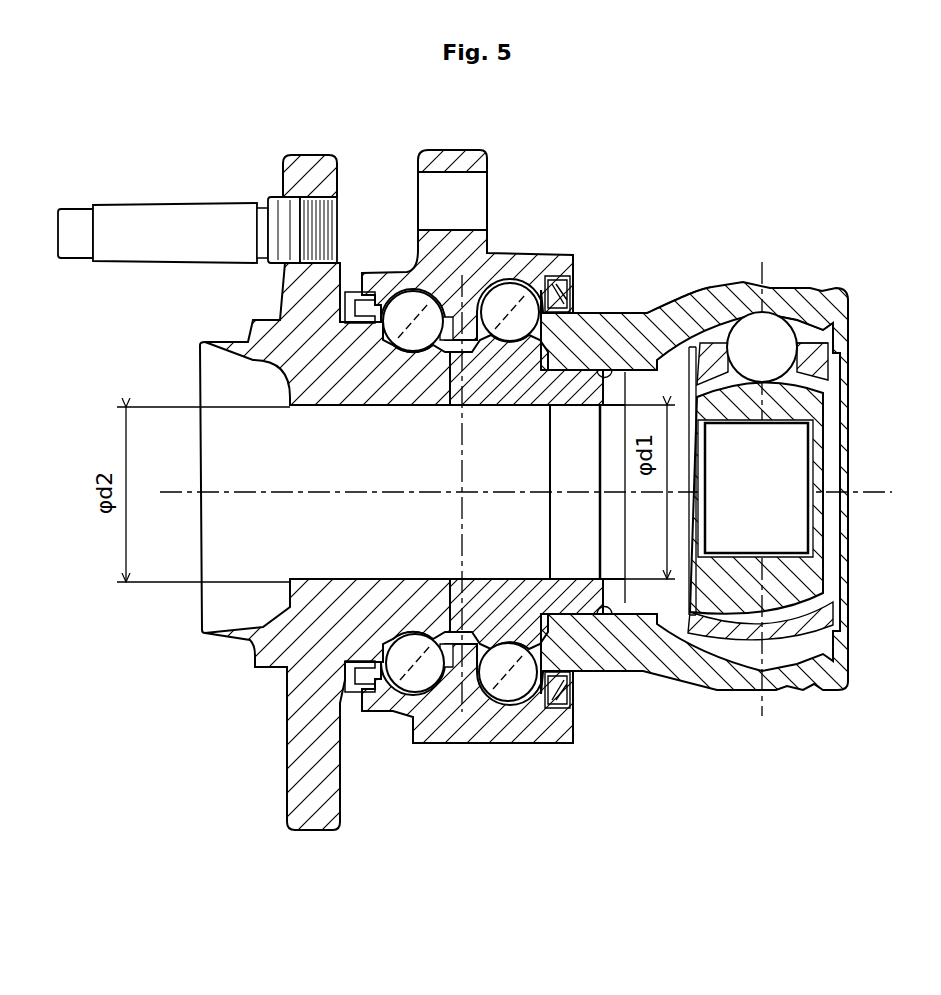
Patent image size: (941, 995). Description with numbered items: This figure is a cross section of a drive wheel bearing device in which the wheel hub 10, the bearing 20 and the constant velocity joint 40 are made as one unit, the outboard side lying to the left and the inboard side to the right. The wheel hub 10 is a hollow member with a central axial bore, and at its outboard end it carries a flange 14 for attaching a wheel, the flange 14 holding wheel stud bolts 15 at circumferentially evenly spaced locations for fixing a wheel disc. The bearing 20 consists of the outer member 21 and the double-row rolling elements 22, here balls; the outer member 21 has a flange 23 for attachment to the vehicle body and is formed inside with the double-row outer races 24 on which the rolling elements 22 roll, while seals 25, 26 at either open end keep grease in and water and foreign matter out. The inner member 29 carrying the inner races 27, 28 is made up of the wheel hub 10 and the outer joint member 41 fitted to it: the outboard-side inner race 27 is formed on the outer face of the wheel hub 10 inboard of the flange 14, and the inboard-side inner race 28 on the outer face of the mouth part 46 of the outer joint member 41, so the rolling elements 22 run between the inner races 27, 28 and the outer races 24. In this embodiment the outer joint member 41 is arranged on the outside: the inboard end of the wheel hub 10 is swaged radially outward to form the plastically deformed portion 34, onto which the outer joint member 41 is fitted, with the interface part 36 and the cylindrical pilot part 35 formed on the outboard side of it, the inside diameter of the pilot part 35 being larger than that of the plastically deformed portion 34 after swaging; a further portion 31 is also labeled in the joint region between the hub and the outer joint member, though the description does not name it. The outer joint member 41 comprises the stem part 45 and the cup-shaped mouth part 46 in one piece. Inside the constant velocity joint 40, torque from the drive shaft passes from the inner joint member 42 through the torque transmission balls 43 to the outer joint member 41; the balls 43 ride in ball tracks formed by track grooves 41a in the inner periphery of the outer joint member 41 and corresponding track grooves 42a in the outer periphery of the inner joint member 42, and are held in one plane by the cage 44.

The wheel hub 10 is at (279, 546).
The flange 14 is at (300, 165).
The wheel stud bolts 15 is at (175, 202).
The bearing 20 is at (414, 424).
The outer member 21 is at (467, 424).
The double-row rolling elements 22 is at (511, 492).
The flange 23 is at (458, 157).
The double-row outer races 24 is at (410, 292).
The seal 25 is at (348, 294).
The seal 26 is at (572, 287).
The outboard-side inner race 27 is at (407, 340).
The inboard-side inner race 28 is at (513, 340).
The inner member 29 is at (250, 672).
The joint portion 31 is at (613, 367).
The plastically deformed portion 34 is at (593, 596).
The pilot part 35 is at (488, 587).
The interface part 36 is at (540, 578).
The constant velocity joint 40 is at (741, 465).
The outer joint member 41 is at (737, 277).
The track grooves 41a is at (843, 327).
The inner joint member 42 is at (815, 497).
The track grooves 42a is at (813, 400).
The torque transmission balls 43 is at (783, 368).
The cage 44 is at (797, 333).
The stem part 45 is at (597, 330).
The mouth part 46 is at (702, 298).